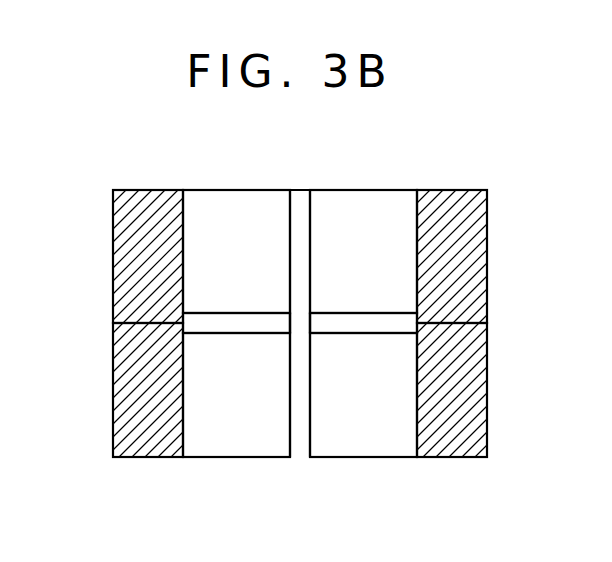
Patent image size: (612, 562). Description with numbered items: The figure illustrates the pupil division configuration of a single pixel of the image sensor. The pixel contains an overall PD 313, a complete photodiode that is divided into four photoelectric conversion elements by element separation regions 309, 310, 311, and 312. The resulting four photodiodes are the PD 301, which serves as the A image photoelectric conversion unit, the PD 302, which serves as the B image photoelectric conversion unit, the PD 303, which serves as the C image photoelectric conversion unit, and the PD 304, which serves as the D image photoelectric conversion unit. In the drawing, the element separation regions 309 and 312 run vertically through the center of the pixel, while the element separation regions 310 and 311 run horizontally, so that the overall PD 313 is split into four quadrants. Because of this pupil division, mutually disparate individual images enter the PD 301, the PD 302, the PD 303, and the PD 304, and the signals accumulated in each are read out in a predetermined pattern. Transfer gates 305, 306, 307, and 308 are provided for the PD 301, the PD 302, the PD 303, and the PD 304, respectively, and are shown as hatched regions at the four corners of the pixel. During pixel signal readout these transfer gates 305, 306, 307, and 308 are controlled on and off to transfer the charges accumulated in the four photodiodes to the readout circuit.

The photodiode 301 is at (200, 197).
The photodiode 302 is at (398, 197).
The photodiode 303 is at (208, 445).
The photodiode 304 is at (385, 445).
The transfer gate 305 is at (113, 190).
The transfer gate 306 is at (487, 190).
The transfer gate 307 is at (113, 457).
The transfer gate 308 is at (487, 457).
The element separation region 309 is at (302, 200).
The element separation region 310 is at (244, 323).
The element separation region 311 is at (357, 323).
The element separation region 312 is at (300, 428).
The overall PD 313 is at (240, 190).